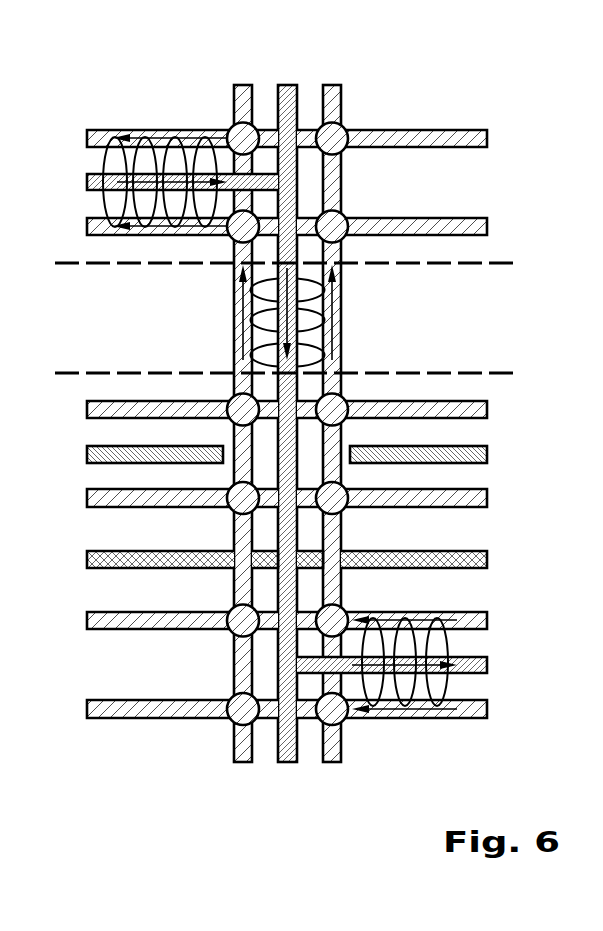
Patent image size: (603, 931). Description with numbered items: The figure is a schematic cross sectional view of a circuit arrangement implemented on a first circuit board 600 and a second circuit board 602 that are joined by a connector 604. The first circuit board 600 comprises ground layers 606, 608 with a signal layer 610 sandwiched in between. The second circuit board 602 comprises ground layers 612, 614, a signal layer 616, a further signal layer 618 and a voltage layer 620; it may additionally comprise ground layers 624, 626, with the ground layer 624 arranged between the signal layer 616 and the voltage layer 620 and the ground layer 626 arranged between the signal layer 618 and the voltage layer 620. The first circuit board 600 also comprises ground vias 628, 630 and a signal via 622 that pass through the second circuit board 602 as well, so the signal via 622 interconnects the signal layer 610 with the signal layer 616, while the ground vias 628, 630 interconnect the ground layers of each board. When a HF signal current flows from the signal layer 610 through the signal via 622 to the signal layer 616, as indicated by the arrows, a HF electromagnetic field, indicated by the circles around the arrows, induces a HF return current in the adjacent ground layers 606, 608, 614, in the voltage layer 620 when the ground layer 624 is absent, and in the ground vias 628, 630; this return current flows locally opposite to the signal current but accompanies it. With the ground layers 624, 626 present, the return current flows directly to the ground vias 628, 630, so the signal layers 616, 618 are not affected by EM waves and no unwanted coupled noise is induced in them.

The first circuit board 600 is at (287, 157).
The second circuit board 602 is at (287, 559).
The connector 604 is at (97, 348).
The ground layer 606 is at (482, 139).
The ground layer 608 is at (482, 227).
The signal layer 610 is at (87, 182).
The ground layer 612 is at (482, 410).
The ground layer 614 is at (482, 709).
The signal layer 616 is at (482, 665).
The signal layer 618 is at (482, 455).
The voltage layer 620 is at (482, 560).
The signal via 622 is at (290, 94).
The ground layer 624 is at (482, 621).
The ground layer 626 is at (482, 498).
The ground via 628 is at (243, 94).
The ground via 630 is at (333, 94).